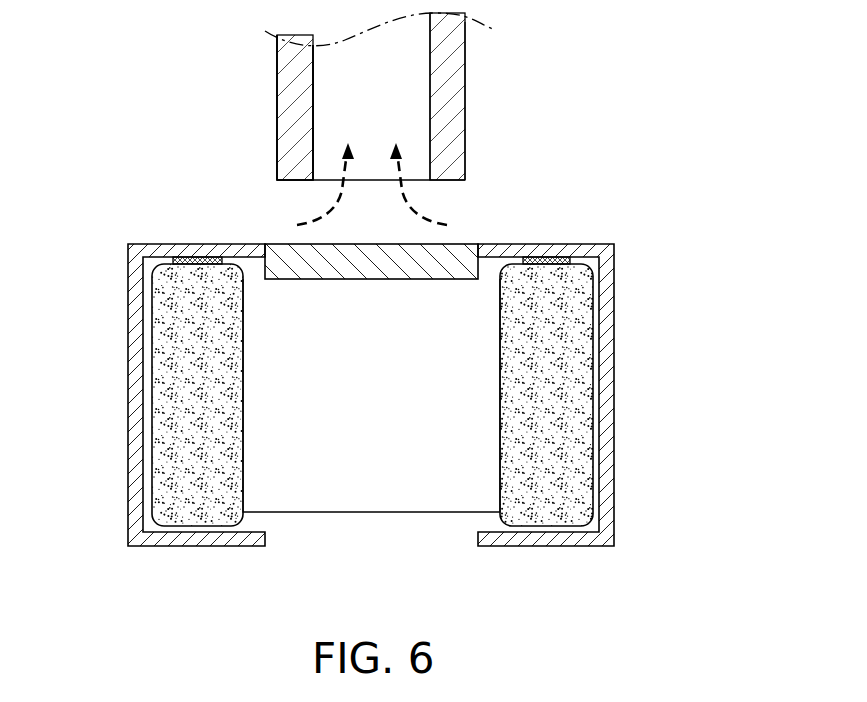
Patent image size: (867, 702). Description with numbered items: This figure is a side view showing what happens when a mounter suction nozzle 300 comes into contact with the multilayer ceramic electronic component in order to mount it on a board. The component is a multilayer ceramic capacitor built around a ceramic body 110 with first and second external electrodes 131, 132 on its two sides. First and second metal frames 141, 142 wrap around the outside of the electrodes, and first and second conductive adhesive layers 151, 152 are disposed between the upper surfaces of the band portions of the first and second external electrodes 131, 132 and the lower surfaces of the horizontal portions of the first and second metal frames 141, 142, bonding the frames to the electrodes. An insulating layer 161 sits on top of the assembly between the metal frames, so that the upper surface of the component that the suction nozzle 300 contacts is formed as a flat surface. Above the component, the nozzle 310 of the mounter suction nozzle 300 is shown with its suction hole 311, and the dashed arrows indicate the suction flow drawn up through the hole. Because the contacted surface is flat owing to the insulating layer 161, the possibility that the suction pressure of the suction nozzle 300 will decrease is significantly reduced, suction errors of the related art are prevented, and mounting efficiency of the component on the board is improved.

The ceramic body 110 is at (392, 498).
The first external electrode 131 is at (140, 400).
The second external electrode 132 is at (605, 398).
The first metal frame 141 is at (115, 320).
The second metal frame 142 is at (626, 320).
The first conductive adhesive layer 151 is at (200, 260).
The second conductive adhesive layer 152 is at (545, 260).
The insulating layer 161 is at (290, 252).
The mounter suction nozzle 300 is at (484, 74).
The nozzle 310 is at (289, 72).
The suction hole 311 is at (333, 119).